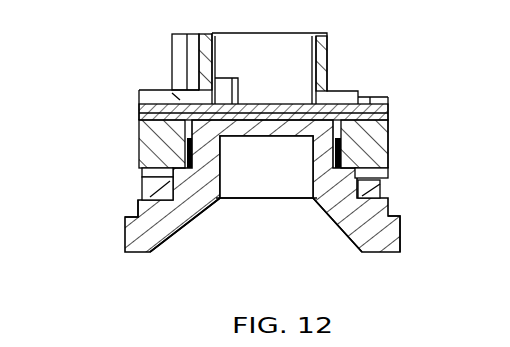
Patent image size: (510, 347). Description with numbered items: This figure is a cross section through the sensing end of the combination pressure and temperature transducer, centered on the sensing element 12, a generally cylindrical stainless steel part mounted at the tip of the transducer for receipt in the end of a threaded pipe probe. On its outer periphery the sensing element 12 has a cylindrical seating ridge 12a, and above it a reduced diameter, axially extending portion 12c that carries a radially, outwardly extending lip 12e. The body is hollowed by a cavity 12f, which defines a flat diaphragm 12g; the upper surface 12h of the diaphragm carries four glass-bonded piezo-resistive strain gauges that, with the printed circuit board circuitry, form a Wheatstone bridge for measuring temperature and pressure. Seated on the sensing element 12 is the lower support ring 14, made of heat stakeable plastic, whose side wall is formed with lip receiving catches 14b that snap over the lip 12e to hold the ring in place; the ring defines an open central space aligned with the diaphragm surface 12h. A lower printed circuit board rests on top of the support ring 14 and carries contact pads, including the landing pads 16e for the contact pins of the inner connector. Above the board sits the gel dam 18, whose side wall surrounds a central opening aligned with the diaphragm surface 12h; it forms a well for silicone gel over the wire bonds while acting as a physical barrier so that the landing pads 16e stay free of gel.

The sensing element 12 is at (242, 213).
The cylindrical seating ridge 12a is at (398, 216).
The reduced diameter, axially extending portion 12c is at (132, 211).
The radially, outwardly extending lip 12e is at (140, 176).
The cavity 12f is at (315, 225).
The flat diaphragm 12g is at (197, 225).
The upper surface 12h is at (266, 167).
The lower support ring 14 is at (400, 147).
The lip receiving catch 14b is at (143, 190).
The landing pad 16e is at (333, 100).
The gel dam 18 is at (333, 60).